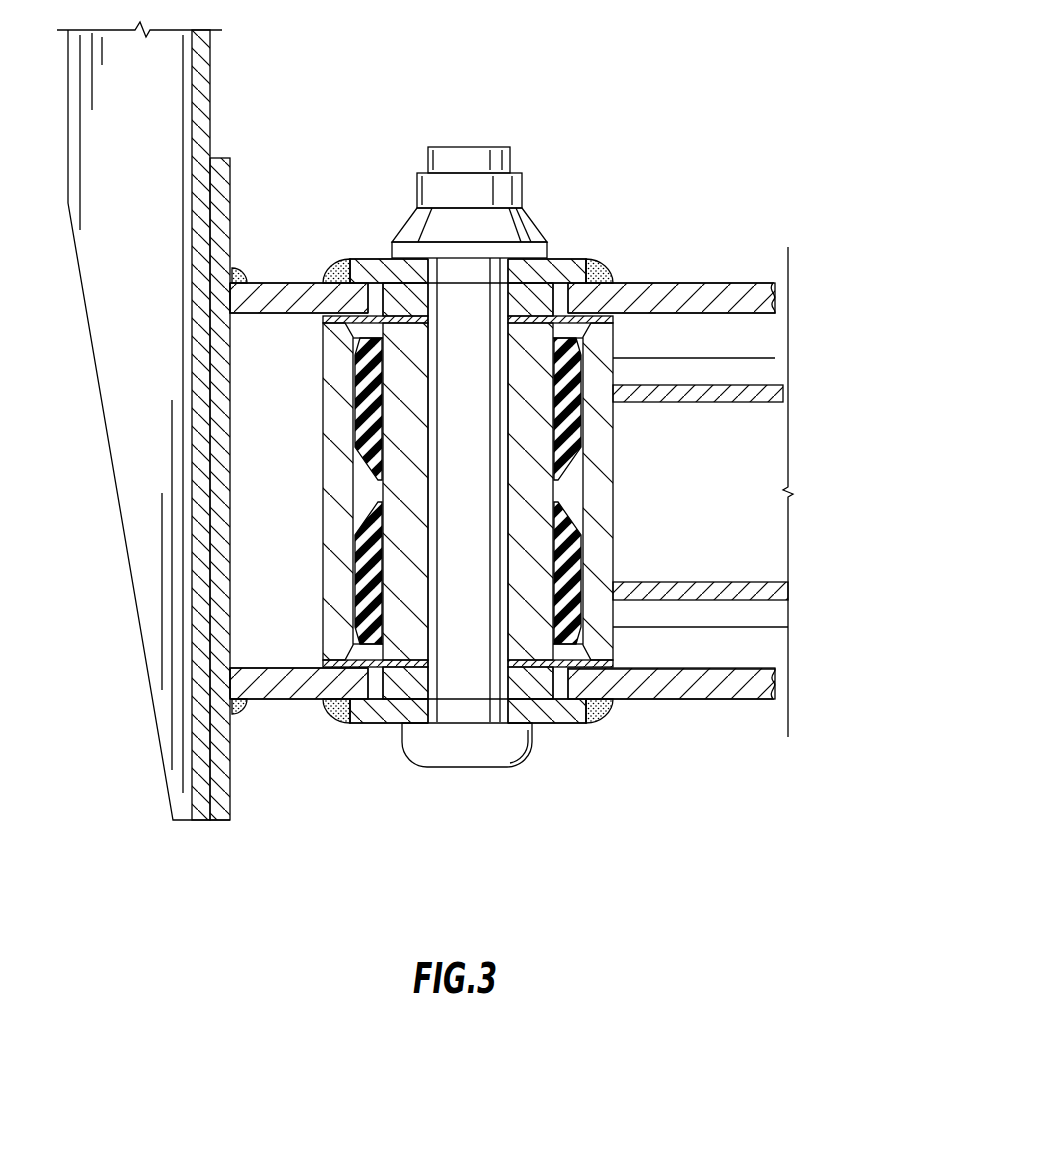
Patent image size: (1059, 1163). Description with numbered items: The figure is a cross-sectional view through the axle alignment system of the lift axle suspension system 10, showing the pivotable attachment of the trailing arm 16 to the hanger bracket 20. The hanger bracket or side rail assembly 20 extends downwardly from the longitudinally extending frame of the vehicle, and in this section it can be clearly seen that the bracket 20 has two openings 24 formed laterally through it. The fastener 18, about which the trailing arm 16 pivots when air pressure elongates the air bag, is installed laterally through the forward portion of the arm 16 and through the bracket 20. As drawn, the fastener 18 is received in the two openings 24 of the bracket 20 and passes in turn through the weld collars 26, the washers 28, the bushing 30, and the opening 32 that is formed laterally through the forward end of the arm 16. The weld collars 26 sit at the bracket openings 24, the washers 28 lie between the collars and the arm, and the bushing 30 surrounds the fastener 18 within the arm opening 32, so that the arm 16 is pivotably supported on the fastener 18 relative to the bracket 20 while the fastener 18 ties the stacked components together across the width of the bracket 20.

The suspension system 10 is at (488, 427).
The trailing arm 16 is at (773, 358).
The fastener 18 is at (498, 763).
The hanger bracket 20 is at (718, 702).
The openings 24 is at (563, 288).
The weld collars 26 is at (352, 265).
The washers 28 is at (613, 320).
The bushing 30 is at (380, 497).
The opening 32 is at (593, 500).